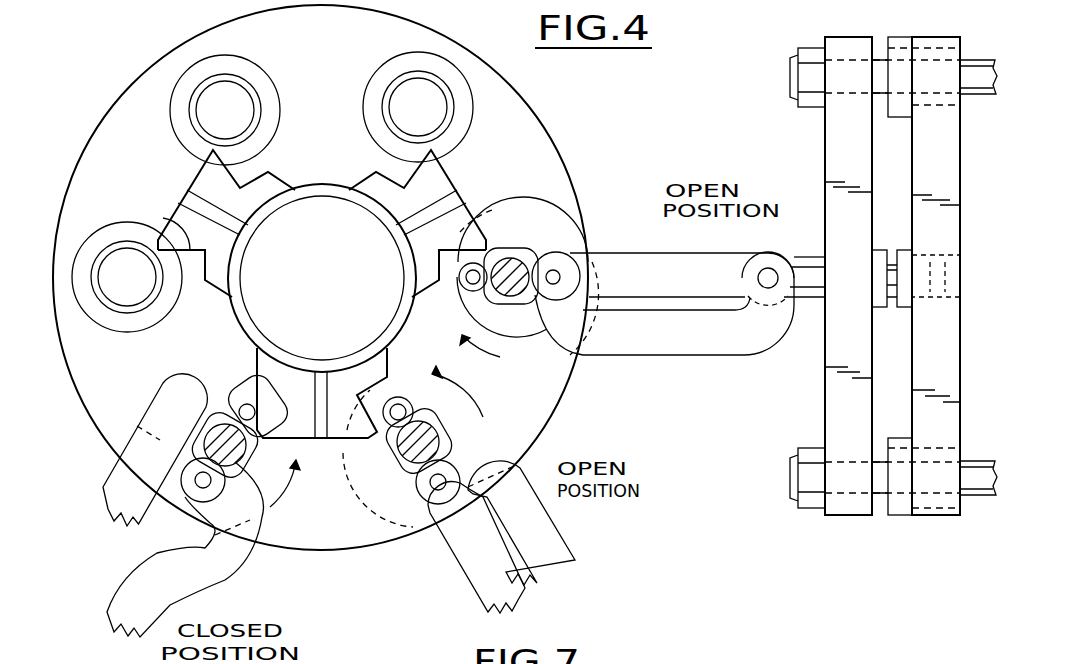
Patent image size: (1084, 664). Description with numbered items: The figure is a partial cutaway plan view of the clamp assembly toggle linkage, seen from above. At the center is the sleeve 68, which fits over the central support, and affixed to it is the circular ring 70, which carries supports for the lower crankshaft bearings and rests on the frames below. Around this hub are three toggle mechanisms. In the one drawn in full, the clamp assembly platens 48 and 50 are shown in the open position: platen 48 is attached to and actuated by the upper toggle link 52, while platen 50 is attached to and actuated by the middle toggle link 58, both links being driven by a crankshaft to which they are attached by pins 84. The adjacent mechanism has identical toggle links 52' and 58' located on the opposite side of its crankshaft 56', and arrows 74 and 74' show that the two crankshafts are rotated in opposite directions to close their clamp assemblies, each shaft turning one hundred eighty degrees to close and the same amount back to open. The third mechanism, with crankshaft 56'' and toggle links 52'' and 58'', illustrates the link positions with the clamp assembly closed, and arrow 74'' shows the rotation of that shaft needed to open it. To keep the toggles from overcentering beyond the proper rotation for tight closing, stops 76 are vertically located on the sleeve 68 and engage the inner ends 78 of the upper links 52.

The clamp assembly platen 48 is at (837, 163).
The clamp assembly platen 50 is at (948, 188).
The upper toggle link 52 is at (746, 311).
The upper toggle link 52' is at (539, 523).
The upper toggle link 52'' is at (153, 450).
The crankshaft 56' is at (408, 449).
The crankshaft 56'' is at (224, 411).
The middle toggle link 58 is at (625, 276).
The middle toggle link 58' is at (472, 547).
The middle toggle link 58'' is at (192, 549).
The sleeve 68 is at (321, 185).
The circular ring 70 is at (547, 152).
The arrow 74 is at (499, 362).
The arrow 74' is at (481, 394).
The arrow 74'' is at (303, 487).
The stop 76 is at (174, 216).
The inner end 78 is at (557, 253).
The pin 84 is at (557, 276).